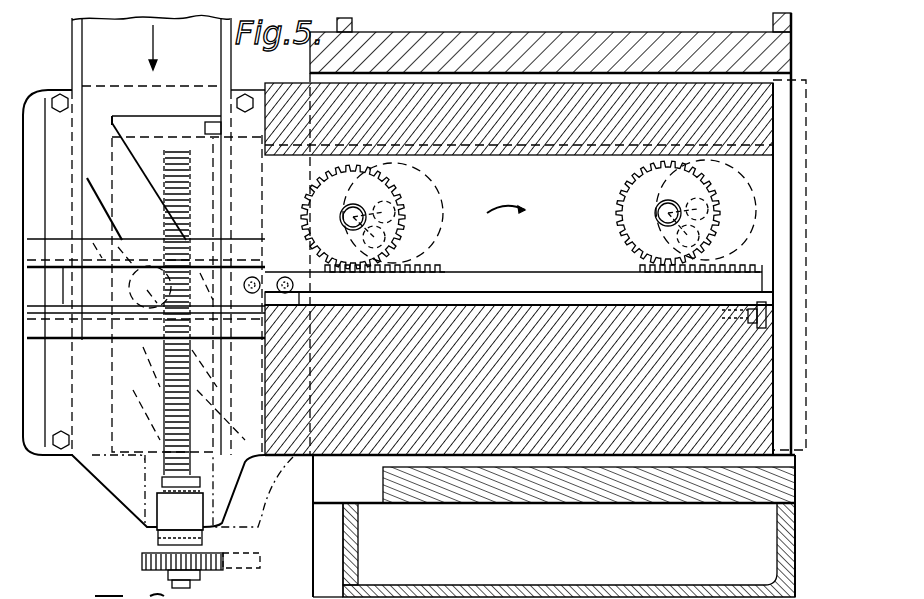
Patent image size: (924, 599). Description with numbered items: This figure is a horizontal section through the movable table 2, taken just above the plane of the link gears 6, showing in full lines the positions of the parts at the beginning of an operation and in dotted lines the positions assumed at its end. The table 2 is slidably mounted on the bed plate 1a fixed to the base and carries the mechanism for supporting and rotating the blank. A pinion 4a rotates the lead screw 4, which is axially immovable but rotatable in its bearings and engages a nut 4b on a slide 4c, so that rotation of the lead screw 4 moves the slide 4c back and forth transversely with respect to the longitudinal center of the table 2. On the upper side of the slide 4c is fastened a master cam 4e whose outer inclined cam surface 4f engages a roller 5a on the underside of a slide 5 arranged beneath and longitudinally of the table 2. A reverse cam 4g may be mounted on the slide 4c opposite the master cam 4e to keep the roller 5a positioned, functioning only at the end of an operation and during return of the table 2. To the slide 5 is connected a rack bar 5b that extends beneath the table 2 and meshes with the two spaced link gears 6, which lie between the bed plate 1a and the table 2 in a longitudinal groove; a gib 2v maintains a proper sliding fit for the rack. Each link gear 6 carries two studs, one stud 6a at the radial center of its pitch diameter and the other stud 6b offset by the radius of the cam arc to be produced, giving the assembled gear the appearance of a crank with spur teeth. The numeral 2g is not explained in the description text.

The bed plate 1a is at (467, 44).
The movable table 2 is at (508, 133).
The gib 2v is at (328, 302).
The housing bracket 2g is at (118, 492).
The lead screw shaft 4 is at (178, 403).
The pinion 4a is at (143, 563).
The nut 4b is at (162, 228).
The slide 4c is at (95, 57).
The master cam 4e is at (181, 116).
The inclined cam surface 4f is at (133, 158).
The reverse cam 4g is at (103, 217).
The slide 5 is at (238, 273).
The roller 5a is at (210, 239).
The rack bar 5b is at (497, 280).
The link gears 6 is at (312, 192).
The stud 6a is at (347, 213).
The stud 6b is at (395, 235).